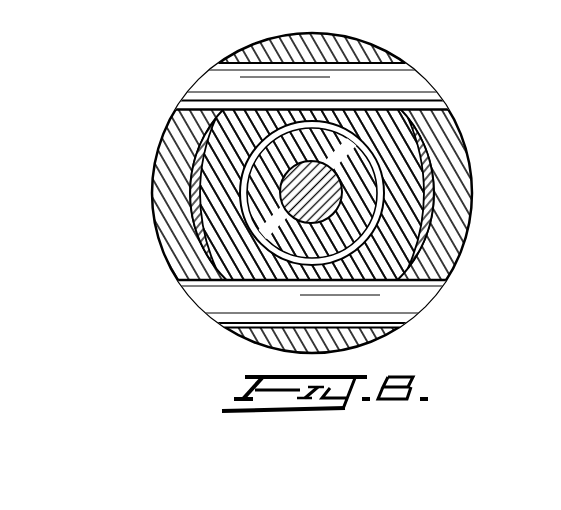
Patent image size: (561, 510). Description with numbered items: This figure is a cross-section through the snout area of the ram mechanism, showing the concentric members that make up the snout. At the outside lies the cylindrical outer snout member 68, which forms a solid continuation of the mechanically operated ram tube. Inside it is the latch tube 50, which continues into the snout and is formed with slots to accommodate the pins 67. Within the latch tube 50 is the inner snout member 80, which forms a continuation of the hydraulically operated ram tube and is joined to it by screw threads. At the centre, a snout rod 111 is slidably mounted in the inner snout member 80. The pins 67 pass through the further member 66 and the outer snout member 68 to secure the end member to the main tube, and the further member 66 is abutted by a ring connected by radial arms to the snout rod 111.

The latch tube 50 is at (193, 201).
The further member 66 is at (384, 135).
The pins 67 is at (397, 86).
The cylindrical outer snout member 68 is at (452, 154).
The inner snout member 80 is at (265, 212).
The snout rod 111 is at (319, 197).